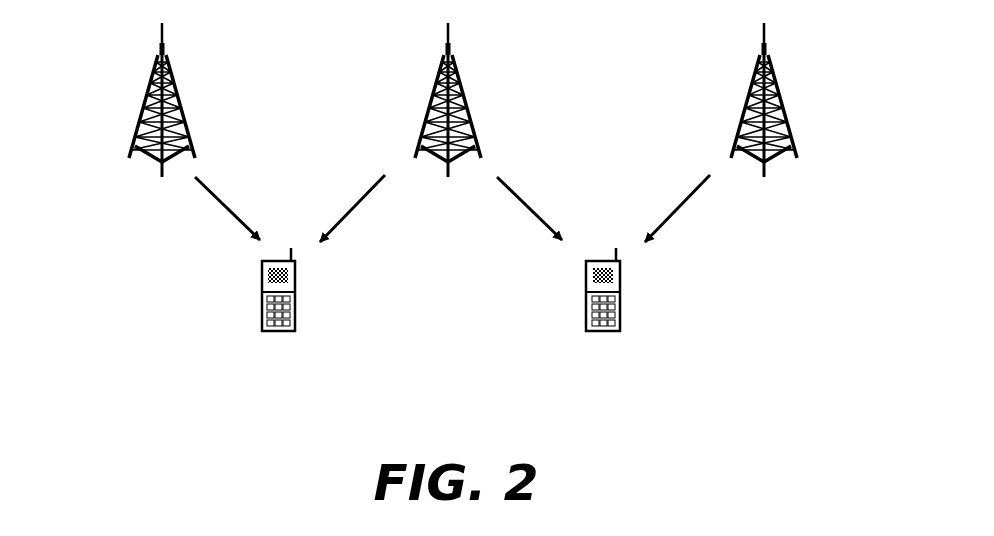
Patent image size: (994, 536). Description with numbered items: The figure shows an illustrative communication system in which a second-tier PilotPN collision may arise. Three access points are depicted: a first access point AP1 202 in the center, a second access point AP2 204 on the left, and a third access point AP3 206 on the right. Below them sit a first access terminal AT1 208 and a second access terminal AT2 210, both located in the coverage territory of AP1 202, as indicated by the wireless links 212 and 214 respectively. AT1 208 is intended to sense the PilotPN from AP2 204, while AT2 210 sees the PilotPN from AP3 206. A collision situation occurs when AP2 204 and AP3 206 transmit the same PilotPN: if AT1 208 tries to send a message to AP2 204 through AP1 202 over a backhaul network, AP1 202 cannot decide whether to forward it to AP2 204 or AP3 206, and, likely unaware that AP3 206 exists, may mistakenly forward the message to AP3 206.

The first access point AP1 202 is at (474, 137).
The second access point AP2 204 is at (188, 137).
The third access point AP3 206 is at (790, 137).
The first access terminal AT1 208 is at (297, 302).
The second access terminal AT2 210 is at (622, 302).
The wireless link 212 is at (356, 206).
The wireless link 214 is at (522, 199).